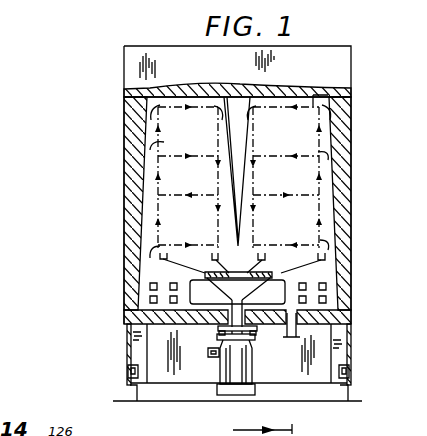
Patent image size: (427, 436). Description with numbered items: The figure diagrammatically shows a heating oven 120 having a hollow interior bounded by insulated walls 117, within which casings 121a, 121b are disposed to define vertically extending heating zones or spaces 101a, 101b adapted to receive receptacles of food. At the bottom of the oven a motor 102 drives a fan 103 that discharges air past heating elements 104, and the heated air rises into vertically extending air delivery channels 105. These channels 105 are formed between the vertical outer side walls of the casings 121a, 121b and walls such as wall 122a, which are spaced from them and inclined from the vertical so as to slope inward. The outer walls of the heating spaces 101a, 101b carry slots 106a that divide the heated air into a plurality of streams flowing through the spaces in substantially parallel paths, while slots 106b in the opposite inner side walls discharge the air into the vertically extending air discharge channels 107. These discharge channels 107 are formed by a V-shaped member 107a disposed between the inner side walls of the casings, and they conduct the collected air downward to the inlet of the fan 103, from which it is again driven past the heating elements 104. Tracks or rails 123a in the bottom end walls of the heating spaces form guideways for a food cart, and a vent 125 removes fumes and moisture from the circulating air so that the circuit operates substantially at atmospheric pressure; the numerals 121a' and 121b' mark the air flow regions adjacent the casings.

The oven 120 is at (96, 129).
The slots 106a is at (147, 106).
The slots 106b is at (238, 151).
The air discharge channels 107 is at (220, 186).
The V-shaped member 107a is at (228, 141).
The air delivery channels 105 is at (147, 233).
The heating elements 104 is at (150, 286).
The fan 103 is at (200, 300).
The motor 102 is at (223, 368).
The vent 125 is at (289, 332).
The insulated walls 117 is at (143, 258).
The tracks or rails 123a is at (163, 258).
The heating zone or space 101a is at (305, 227).
The heating zone or space 101b is at (210, 227).
The casing 121a is at (368, 192).
The right upper gas flow 121a' is at (343, 73).
The casing 121b is at (109, 156).
The left upper gas flow 121b' is at (105, 190).
The wall 122a is at (332, 138).